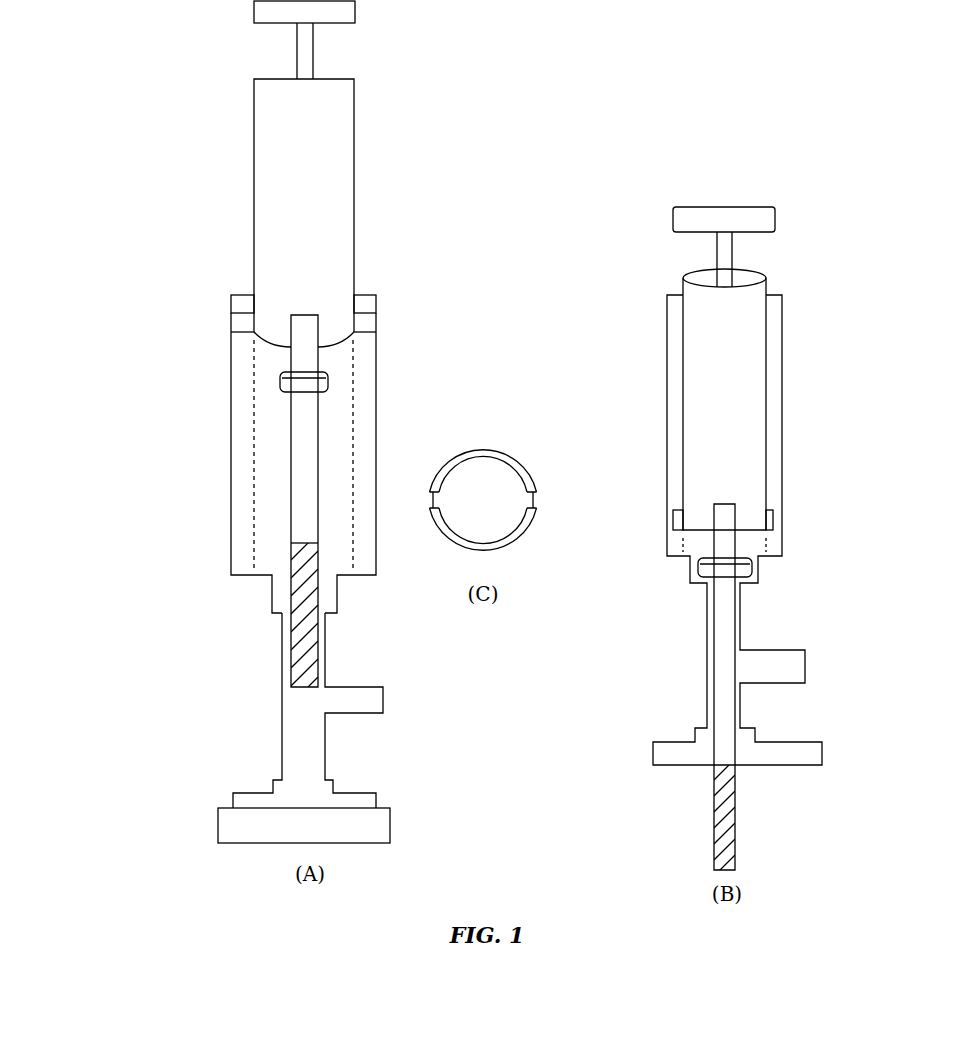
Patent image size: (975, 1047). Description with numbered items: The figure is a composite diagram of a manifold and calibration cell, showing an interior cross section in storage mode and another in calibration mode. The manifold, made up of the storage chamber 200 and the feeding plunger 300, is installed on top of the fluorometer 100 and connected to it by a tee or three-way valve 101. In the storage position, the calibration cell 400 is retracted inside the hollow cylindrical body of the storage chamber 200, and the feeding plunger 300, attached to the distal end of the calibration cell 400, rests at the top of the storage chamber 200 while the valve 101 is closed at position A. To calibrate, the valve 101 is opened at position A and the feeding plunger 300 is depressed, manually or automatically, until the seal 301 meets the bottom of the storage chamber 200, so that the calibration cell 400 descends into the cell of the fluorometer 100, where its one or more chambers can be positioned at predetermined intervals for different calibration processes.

The fluorometer 100 is at (242, 832).
The three-way valve 101 is at (302, 700).
The storage chamber 200 is at (270, 427).
The feeding plunger 300 is at (275, 184).
The seal 301 is at (300, 375).
The calibration cell 400 is at (308, 463).